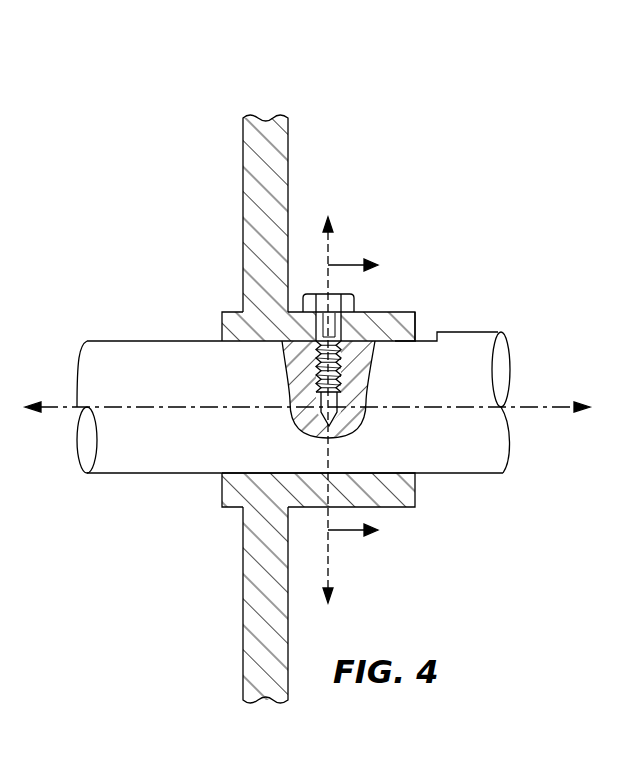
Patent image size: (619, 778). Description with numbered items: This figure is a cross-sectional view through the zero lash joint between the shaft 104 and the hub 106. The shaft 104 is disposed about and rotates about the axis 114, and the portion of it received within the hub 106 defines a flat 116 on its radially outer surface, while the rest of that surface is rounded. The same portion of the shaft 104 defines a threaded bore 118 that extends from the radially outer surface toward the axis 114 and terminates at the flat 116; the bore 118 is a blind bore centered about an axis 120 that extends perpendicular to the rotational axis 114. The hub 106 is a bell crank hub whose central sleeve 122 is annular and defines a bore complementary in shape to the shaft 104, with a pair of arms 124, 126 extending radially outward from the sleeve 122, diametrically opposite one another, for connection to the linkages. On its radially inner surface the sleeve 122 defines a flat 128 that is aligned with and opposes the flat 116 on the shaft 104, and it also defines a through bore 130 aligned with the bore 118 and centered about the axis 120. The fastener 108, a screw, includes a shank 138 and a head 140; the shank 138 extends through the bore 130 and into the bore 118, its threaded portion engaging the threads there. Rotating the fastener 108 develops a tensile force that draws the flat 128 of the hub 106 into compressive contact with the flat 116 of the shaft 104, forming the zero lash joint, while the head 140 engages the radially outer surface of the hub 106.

The shaft 104 is at (326, 390).
The hub 106 is at (306, 229).
The fastener 108 is at (333, 338).
The axis 114 is at (548, 402).
The flat 116 is at (425, 332).
The threaded bore 118 is at (323, 412).
The axis 120 is at (330, 558).
The sleeve 122 is at (398, 488).
The arm 124 is at (257, 175).
The arm 126 is at (261, 658).
The flat 128 is at (287, 338).
The through bore 130 is at (408, 338).
The shank 138 is at (318, 366).
The head 140 is at (347, 305).